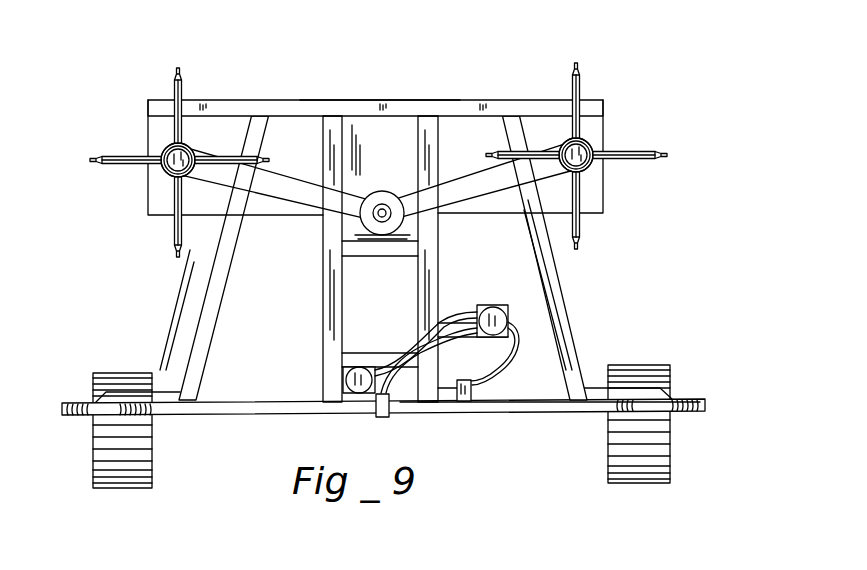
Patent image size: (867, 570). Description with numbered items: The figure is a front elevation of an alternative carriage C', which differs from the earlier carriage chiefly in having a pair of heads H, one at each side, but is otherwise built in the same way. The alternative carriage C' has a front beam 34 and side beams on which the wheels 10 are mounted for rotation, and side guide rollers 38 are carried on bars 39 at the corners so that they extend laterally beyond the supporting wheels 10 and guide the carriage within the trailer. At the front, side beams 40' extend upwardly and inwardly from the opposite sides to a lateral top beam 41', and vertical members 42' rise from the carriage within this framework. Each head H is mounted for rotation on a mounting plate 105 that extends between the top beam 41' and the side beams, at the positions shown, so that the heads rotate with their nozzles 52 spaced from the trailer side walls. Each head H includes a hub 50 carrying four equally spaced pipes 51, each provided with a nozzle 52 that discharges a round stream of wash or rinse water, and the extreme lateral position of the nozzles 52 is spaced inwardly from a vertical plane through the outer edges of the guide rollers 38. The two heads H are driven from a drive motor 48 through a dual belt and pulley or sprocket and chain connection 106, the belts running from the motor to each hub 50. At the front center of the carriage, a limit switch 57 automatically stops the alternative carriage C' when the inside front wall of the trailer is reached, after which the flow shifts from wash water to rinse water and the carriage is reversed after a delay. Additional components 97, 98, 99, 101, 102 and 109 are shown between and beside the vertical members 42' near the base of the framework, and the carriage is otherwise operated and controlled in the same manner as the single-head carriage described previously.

The wheels 10 is at (140, 456).
The front beam 34 is at (560, 410).
The side guide rollers 38 is at (66, 404).
The bars 39 is at (166, 390).
The side beams 40' is at (378, 258).
The top beam 41' is at (375, 83).
The vertical column 42' is at (354, 259).
The drive motor 48 is at (376, 193).
The hub 50 is at (165, 180).
The pipes 51 is at (186, 92).
The nozzles 52 is at (184, 76).
The limit switch 57 is at (378, 417).
The motor housing 97 is at (491, 305).
The cable 98 is at (513, 350).
The switch block 99 is at (472, 390).
The cross bar 101 is at (402, 352).
The lower motor housing 102 is at (343, 378).
The mounting plate 105 is at (148, 122).
The dual belt and pulley or sprocket and chain connection 106 is at (297, 215).
The cable 109 is at (447, 362).
The alternative carriage C' is at (380, 69).
The head H is at (146, 178).